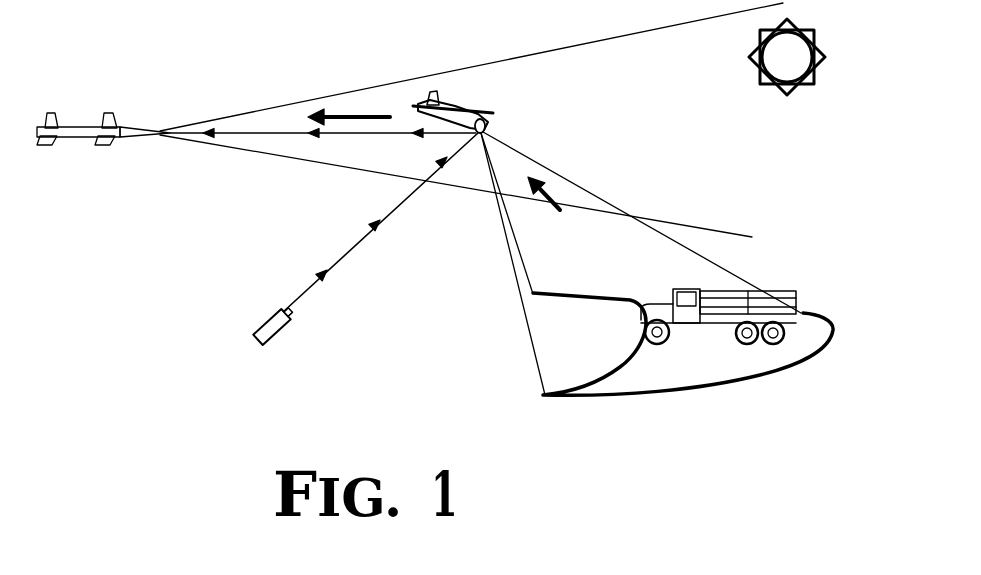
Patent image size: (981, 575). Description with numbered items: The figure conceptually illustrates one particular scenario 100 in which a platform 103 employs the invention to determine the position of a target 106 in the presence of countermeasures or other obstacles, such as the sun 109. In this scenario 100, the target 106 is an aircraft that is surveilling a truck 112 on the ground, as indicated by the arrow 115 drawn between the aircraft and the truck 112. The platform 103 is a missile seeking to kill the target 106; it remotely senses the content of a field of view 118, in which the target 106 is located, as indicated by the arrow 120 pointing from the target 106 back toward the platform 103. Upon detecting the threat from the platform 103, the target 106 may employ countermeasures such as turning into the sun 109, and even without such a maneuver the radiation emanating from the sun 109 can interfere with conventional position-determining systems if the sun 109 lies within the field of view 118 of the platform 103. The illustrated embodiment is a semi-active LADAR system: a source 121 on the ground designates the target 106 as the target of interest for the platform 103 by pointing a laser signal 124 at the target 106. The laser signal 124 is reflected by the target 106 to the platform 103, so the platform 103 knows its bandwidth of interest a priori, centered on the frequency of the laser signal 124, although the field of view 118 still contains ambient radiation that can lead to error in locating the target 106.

The scenario 100 is at (108, 27).
The platform 103 is at (118, 117).
The target 106 is at (480, 115).
The sun 109 is at (757, 70).
The truck 112 is at (787, 293).
The arrow 115 is at (547, 192).
The field of view 118 is at (624, 95).
The arrow 120 is at (350, 115).
The source 121 is at (282, 330).
The laser signal 124 is at (353, 250).